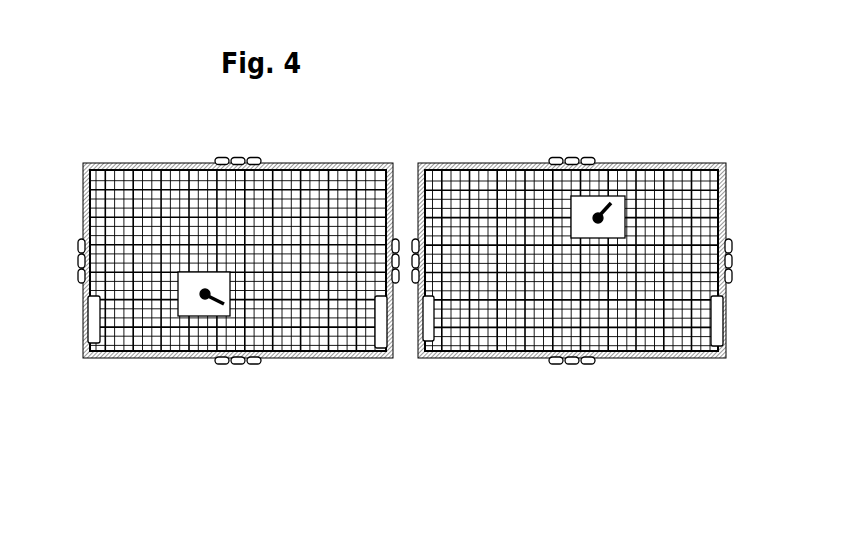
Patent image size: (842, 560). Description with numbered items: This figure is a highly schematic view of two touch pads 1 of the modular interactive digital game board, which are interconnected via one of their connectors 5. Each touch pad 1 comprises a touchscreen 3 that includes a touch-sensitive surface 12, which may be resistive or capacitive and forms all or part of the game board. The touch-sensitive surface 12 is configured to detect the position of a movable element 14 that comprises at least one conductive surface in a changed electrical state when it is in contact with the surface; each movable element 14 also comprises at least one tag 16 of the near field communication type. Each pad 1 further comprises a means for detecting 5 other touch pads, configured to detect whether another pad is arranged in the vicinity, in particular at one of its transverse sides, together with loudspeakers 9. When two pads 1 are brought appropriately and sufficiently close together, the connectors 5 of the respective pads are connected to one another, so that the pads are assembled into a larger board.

The touch pad 1 is at (128, 124).
The touchscreen 3 is at (168, 160).
The means for detecting other touch pads 5 is at (385, 238).
The loudspeakers 9 is at (100, 318).
The touch-sensitive surface 12 is at (290, 190).
The movable element 14 is at (170, 297).
The tag 16 is at (222, 293).